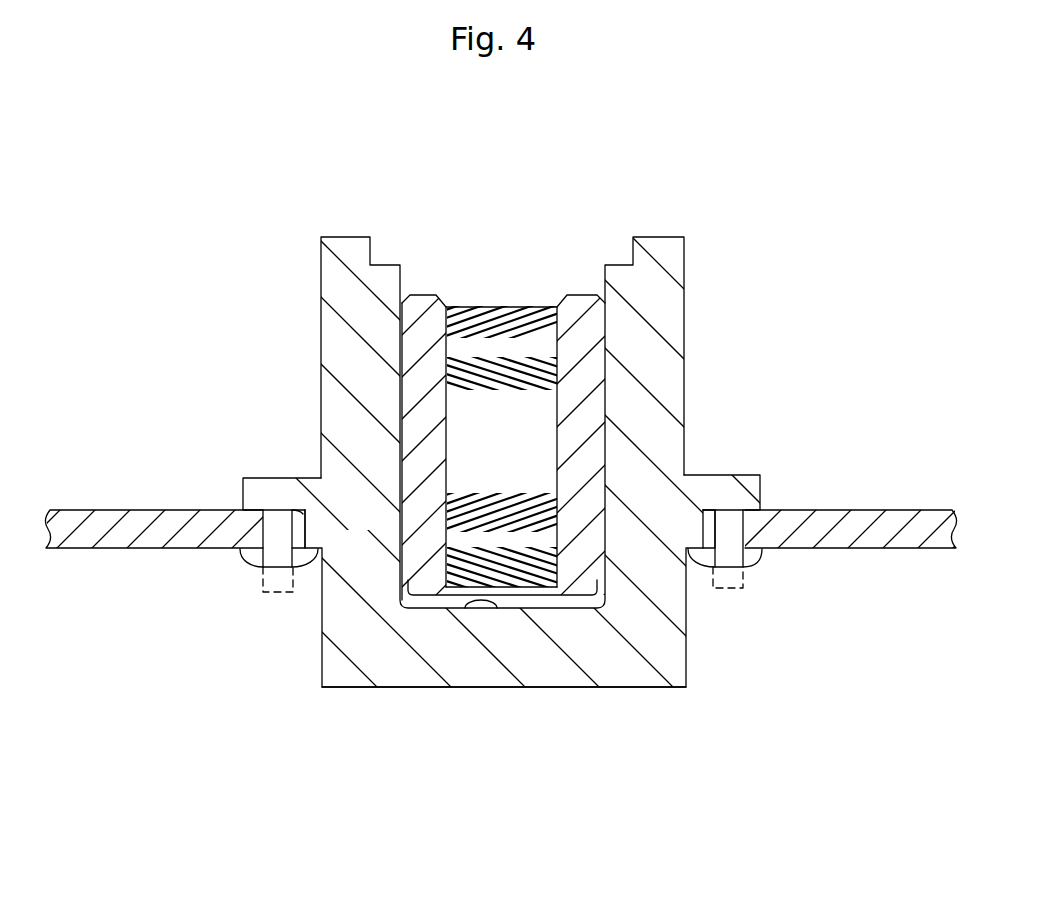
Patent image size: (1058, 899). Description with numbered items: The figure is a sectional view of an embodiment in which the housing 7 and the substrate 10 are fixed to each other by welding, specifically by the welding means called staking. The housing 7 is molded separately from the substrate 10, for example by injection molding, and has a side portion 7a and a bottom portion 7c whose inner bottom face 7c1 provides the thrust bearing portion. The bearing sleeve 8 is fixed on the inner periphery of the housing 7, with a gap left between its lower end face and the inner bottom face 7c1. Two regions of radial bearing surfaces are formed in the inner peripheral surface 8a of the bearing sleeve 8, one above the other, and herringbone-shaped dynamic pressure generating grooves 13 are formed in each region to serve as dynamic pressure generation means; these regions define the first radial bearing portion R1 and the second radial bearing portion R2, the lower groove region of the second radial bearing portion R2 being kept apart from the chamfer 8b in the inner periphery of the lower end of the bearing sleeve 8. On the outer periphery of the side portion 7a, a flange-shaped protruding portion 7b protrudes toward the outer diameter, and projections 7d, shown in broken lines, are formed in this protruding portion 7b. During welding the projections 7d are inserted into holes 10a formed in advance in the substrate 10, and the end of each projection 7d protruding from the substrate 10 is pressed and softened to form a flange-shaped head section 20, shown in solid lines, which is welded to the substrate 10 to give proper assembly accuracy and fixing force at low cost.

The housing 7 is at (692, 230).
The side portion 7a is at (337, 327).
The flange-shaped protruding portion 7b is at (243, 490).
The bottom portion 7c is at (548, 668).
The inner bottom face 7c1 is at (462, 606).
The projections 7d is at (262, 584).
The bearing sleeve 8 is at (422, 558).
The inner peripheral surface 8a is at (450, 447).
The chamfer 8b is at (562, 608).
The substrate 10 is at (897, 548).
The holes 10a is at (265, 526).
The dynamic pressure generating grooves 13 is at (510, 306).
The head section 20 is at (253, 558).
The first radial bearing portion R1 is at (568, 340).
The second radial bearing portion R2 is at (572, 530).